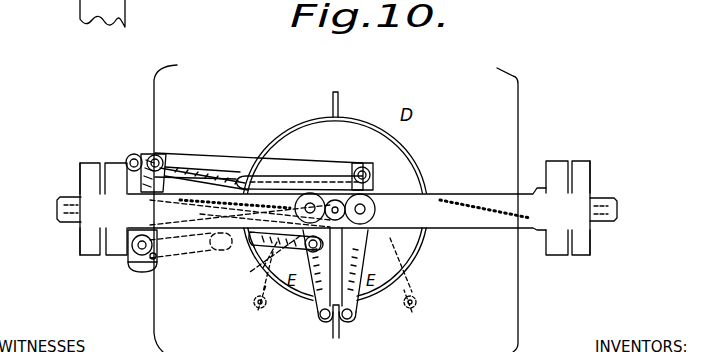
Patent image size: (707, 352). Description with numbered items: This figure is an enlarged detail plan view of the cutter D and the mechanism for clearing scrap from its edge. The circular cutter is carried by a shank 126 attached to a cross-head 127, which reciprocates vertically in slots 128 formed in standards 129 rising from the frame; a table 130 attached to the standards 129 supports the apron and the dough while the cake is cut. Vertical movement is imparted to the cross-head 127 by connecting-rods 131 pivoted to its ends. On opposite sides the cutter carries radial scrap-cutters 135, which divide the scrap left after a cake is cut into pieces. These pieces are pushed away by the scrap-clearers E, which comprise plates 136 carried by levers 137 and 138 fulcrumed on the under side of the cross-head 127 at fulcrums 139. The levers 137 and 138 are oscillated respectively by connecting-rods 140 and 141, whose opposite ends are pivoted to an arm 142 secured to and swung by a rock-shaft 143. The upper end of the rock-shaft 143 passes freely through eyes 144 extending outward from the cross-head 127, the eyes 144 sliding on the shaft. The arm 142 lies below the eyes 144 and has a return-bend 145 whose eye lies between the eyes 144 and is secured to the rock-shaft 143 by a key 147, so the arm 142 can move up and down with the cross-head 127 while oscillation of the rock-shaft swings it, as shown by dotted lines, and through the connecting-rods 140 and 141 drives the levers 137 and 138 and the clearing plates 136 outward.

The shank 126 is at (338, 200).
The cross-head 127 is at (461, 196).
The slots 128 is at (80, 197).
The standards 129 is at (80, 237).
The table 130 is at (162, 88).
The connecting-rods 131 is at (57, 203).
The radial scrap-cutters 135 is at (336, 93).
The scrap-clearing plates 136 is at (323, 320).
The lever 137 is at (308, 300).
The lever 138 is at (362, 306).
The fulcrums 139 is at (353, 185).
The connecting-rod 140 is at (256, 296).
The connecting-rod 141 is at (238, 160).
The arm 142 is at (150, 178).
The rock-shaft 143 is at (128, 255).
The eyes 144 is at (137, 265).
The return-bend 145 is at (210, 235).
The key 147 is at (155, 259).